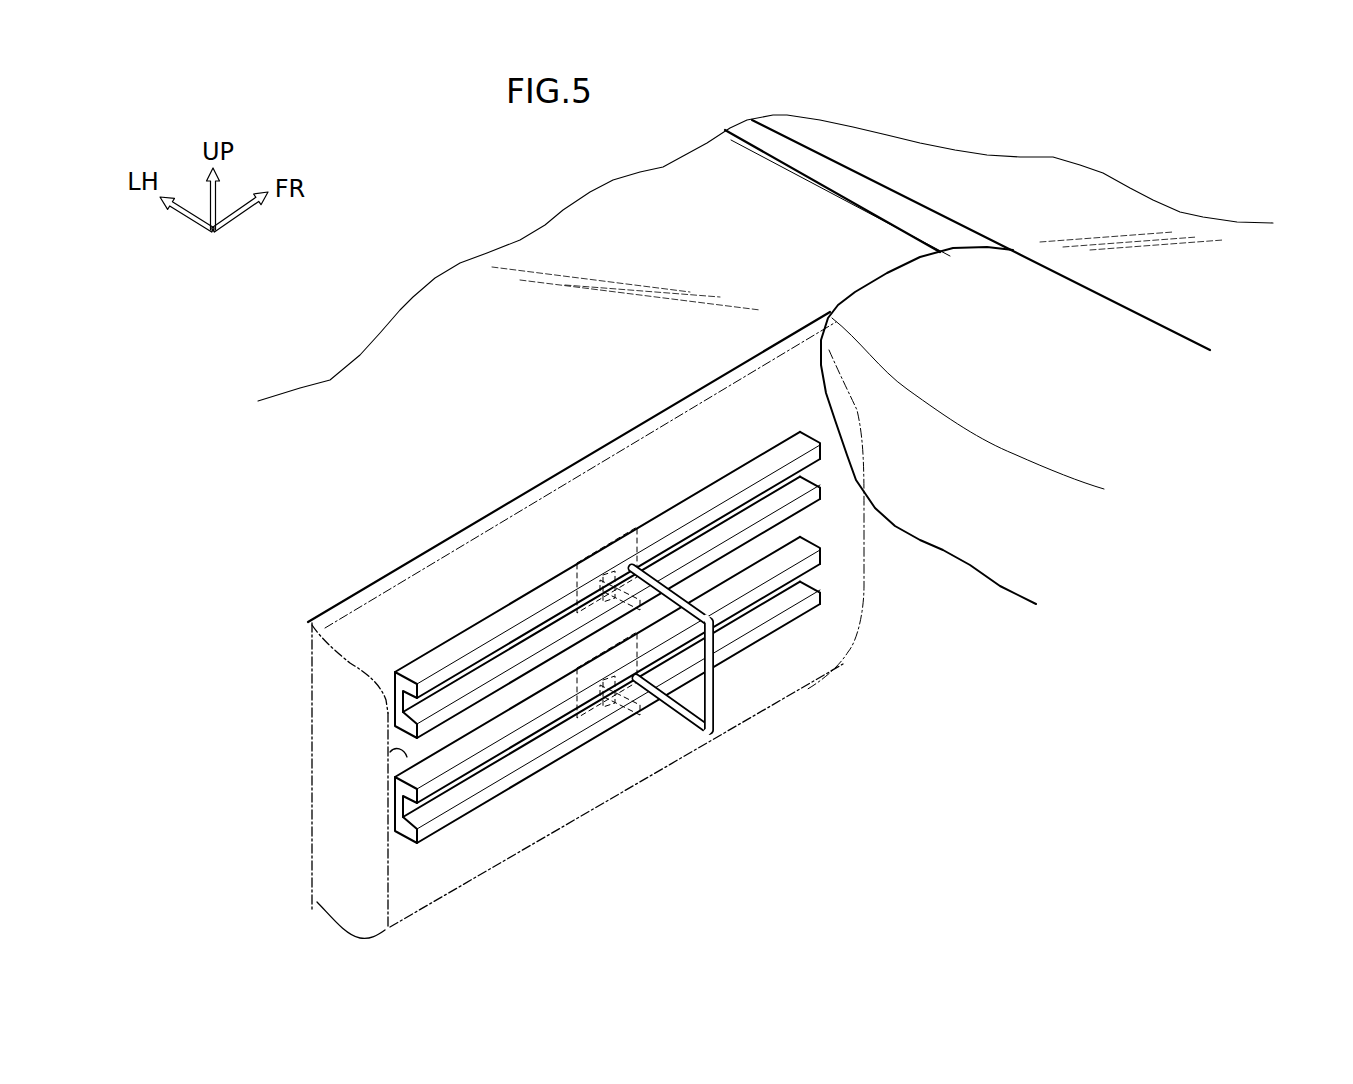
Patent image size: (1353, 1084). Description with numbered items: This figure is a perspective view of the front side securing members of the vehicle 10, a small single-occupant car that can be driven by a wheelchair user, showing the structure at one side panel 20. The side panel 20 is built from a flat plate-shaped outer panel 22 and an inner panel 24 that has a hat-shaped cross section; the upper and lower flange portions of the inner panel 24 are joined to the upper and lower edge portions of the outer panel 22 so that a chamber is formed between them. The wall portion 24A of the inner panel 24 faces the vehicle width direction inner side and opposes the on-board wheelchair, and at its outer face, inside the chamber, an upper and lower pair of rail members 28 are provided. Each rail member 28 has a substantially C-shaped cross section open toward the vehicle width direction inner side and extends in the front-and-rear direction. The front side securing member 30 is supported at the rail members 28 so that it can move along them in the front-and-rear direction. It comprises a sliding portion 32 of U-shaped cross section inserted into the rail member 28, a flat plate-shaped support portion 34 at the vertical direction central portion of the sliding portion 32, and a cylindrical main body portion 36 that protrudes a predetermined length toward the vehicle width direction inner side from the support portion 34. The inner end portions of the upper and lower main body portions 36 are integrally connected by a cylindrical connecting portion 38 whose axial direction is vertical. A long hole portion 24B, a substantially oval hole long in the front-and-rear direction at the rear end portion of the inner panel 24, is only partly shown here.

The vehicle 10 is at (943, 139).
The side panel 20 is at (303, 810).
The outer panel 22 is at (310, 741).
The inner panel 24 is at (497, 868).
The wall portion 24A is at (547, 803).
The long hole portion 24B is at (404, 756).
The rail member 28 is at (463, 628).
The front side securing member 30 is at (762, 612).
The sliding portion 32 is at (600, 567).
The support portion 34 is at (610, 592).
The main body portion 36 is at (690, 598).
The connecting portion 38 is at (715, 680).